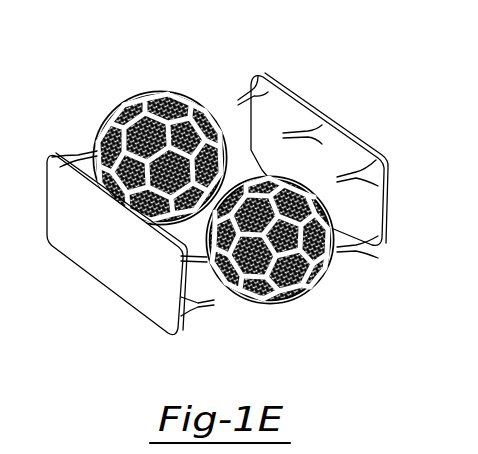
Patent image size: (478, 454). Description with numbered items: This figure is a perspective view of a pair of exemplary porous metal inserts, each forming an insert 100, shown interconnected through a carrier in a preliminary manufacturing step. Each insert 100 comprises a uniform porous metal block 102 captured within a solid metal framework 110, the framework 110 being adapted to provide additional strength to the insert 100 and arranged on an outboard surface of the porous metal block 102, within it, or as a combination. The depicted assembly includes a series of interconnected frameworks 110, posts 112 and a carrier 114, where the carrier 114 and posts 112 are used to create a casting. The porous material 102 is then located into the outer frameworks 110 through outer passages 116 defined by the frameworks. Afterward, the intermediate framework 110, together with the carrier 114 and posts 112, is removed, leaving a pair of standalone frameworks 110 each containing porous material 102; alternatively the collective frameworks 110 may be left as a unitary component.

The insert 100 is at (226, 176).
The porous metal block 102 is at (133, 123).
The framework 110 is at (180, 93).
The post 112 is at (219, 97).
The carrier 114 is at (340, 158).
The outer passage 116 is at (92, 133).